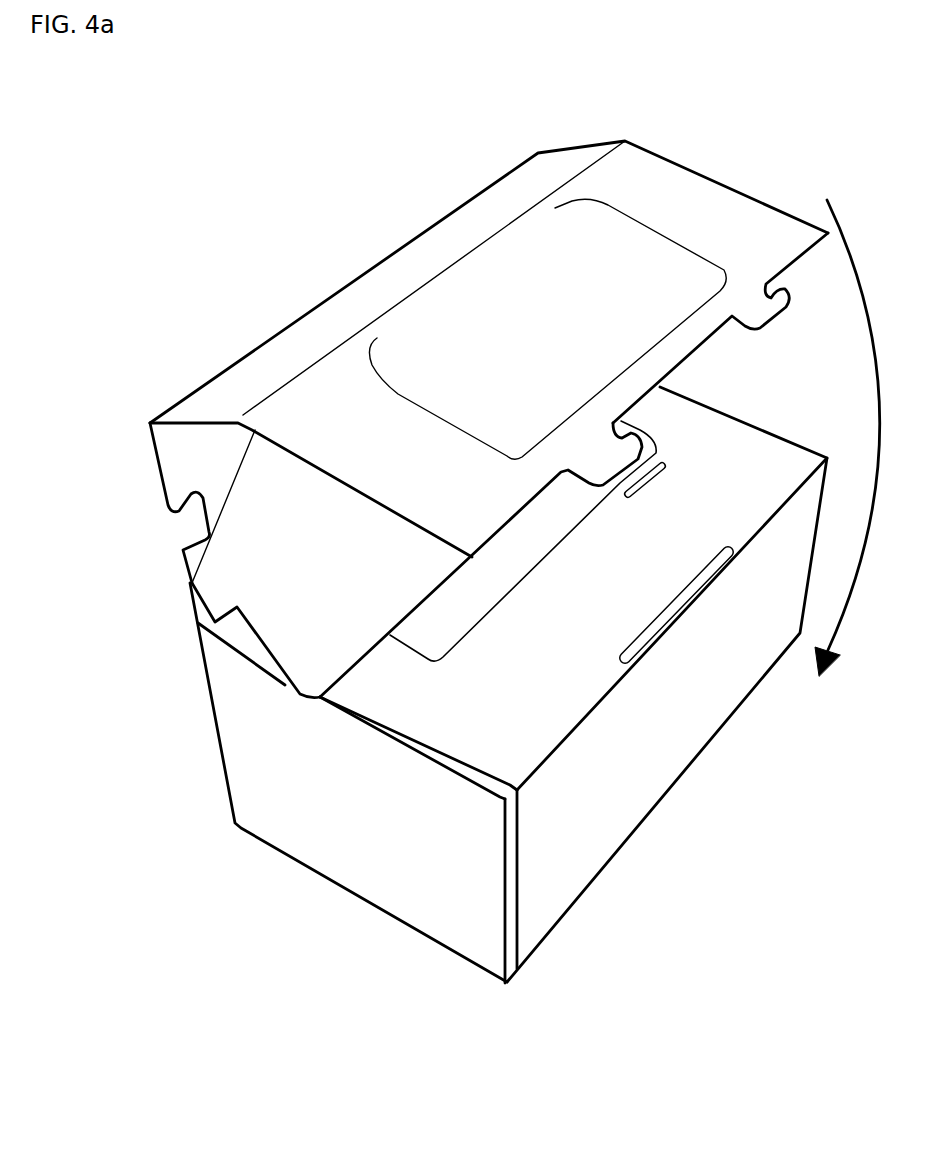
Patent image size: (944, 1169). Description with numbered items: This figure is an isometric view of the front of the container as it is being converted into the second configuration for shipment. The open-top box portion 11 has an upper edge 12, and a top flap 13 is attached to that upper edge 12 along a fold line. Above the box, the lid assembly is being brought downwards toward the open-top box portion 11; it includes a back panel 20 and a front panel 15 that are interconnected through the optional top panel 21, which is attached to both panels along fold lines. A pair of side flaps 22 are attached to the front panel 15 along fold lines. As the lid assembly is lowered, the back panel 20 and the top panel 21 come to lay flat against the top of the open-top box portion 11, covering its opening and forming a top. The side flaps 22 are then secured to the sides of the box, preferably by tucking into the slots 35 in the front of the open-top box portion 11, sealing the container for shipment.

The open-top box portion 11 is at (372, 853).
The upper edge 12 is at (807, 468).
The top flap 13 is at (742, 470).
The front panel 15 is at (693, 205).
The back panel 20 is at (195, 450).
The top panel 21 is at (564, 167).
The side flaps 22 is at (192, 583).
The slots 35 is at (510, 910).